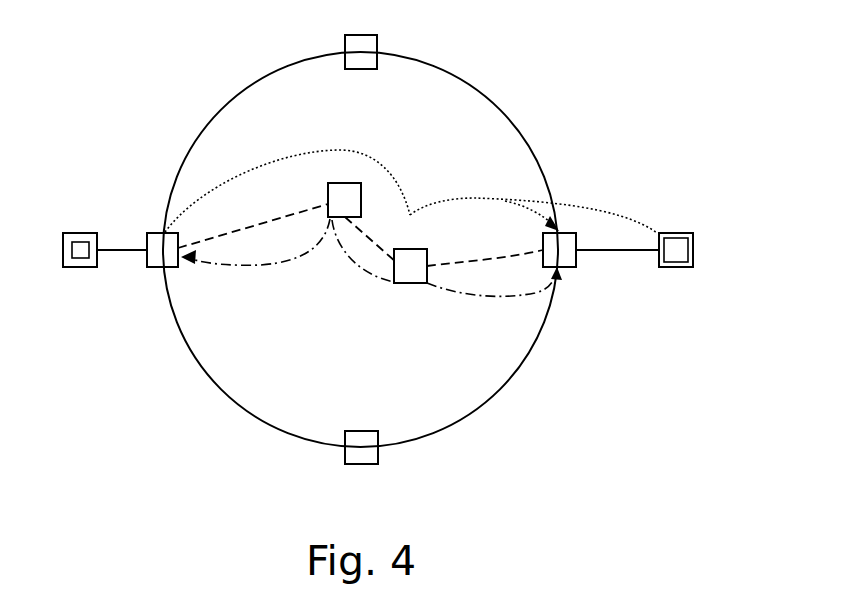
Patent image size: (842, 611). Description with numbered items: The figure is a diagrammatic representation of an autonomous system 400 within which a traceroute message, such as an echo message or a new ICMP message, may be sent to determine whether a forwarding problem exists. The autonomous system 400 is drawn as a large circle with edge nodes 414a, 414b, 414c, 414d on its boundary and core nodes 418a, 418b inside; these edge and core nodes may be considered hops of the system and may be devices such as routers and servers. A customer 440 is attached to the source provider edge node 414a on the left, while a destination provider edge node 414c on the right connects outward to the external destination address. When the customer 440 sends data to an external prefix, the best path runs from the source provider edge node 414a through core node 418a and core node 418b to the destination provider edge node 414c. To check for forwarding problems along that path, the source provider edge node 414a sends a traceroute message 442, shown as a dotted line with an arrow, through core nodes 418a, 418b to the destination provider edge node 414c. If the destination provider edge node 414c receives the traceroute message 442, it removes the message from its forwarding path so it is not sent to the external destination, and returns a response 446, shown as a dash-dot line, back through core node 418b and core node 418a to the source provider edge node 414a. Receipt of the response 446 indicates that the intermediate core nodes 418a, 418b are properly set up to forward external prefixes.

The autonomous system 400 is at (271, 427).
The source provider edge node 414a is at (157, 233).
The edge node 414b is at (358, 35).
The destination provider edge node 414c is at (567, 267).
The edge node 414d is at (362, 464).
The core node 418a is at (328, 187).
The core node 418b is at (412, 249).
The customer 440 is at (83, 267).
The traceroute message 442 is at (510, 202).
The response 446 is at (528, 292).